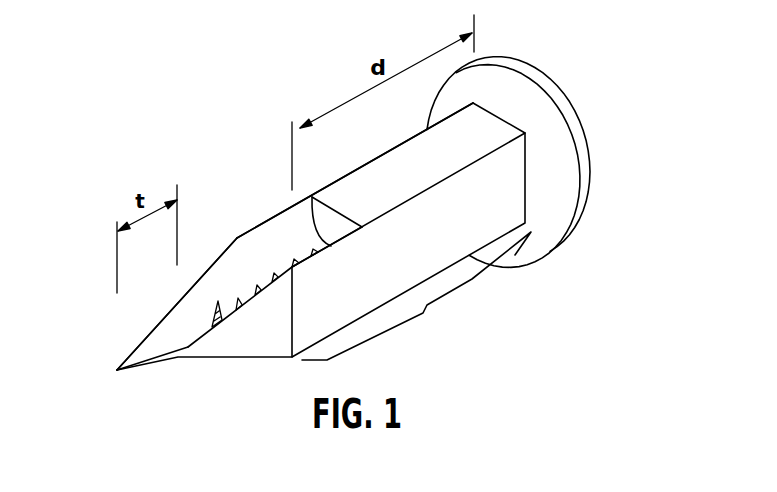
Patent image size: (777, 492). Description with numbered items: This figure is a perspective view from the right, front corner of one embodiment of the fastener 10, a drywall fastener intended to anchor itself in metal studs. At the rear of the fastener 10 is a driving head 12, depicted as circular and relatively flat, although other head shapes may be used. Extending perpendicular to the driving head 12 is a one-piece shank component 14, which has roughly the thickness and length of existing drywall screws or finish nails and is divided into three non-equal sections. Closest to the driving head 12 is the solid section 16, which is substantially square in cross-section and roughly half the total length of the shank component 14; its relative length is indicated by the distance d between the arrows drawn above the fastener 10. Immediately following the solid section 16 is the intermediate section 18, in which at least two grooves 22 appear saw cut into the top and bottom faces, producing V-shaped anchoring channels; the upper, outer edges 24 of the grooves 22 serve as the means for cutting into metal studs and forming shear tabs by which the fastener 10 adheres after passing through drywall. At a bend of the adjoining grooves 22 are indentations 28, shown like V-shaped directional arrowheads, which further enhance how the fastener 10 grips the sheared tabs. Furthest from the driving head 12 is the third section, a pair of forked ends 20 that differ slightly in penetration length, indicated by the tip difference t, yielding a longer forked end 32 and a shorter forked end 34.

The fastener 10 is at (232, 184).
The driving head 12 is at (589, 164).
The shank component 14 is at (324, 236).
The solid section 16 is at (396, 146).
The intermediate section 18 is at (323, 311).
The forked ends 20 is at (90, 339).
The grooves 22 is at (283, 239).
The upper, outer edges 24 is at (248, 231).
The indentations 28 is at (228, 307).
The longer forked end 32 is at (161, 352).
The shorter forked end 34 is at (240, 334).